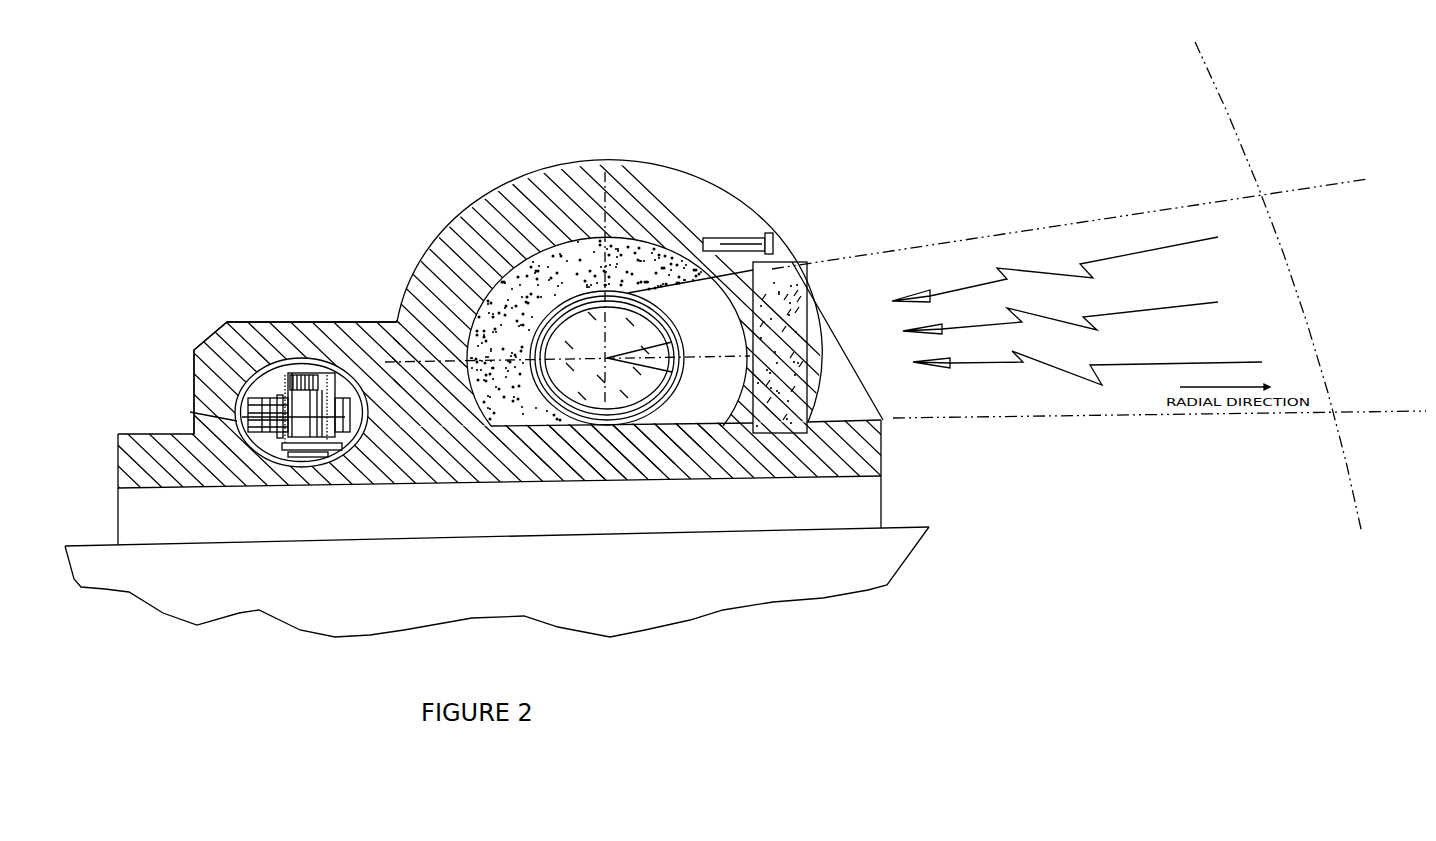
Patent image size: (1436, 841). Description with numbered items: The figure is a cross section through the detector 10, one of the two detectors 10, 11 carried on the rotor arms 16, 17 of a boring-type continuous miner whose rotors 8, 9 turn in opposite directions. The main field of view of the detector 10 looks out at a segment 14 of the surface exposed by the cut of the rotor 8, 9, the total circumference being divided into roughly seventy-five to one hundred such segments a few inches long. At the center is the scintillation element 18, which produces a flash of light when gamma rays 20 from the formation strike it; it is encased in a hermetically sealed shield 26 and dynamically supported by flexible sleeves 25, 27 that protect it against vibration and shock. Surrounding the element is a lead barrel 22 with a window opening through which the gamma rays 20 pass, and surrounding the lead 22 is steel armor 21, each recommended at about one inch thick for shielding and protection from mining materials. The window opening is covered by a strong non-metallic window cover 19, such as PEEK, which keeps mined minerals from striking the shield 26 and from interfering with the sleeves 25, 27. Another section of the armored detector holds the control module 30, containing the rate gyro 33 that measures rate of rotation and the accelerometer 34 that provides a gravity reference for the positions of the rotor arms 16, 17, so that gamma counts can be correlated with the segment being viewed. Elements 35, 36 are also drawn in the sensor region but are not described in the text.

The rotor 8 is at (501, 347).
The rotor 9 is at (501, 347).
The detector 10 is at (635, 243).
The detector 11 is at (518, 176).
The segment 14 is at (1278, 287).
The rotor arm 16 is at (497, 582).
The rotor arm 17 is at (497, 582).
The scintillation element 18 is at (567, 358).
The window cover 19 is at (755, 333).
The gamma rays 20 is at (1077, 311).
The armor 21 is at (501, 340).
The lead barrel 22 is at (610, 331).
The flexible sleeve 25 is at (668, 327).
The shield 26 is at (676, 347).
The flexible sleeve 27 is at (675, 372).
The control module 30 is at (267, 379).
The rate gyro 33 is at (313, 375).
The accelerometer 34 is at (321, 457).
The block 35 is at (210, 352).
The sensor housing part 36 is at (233, 410).